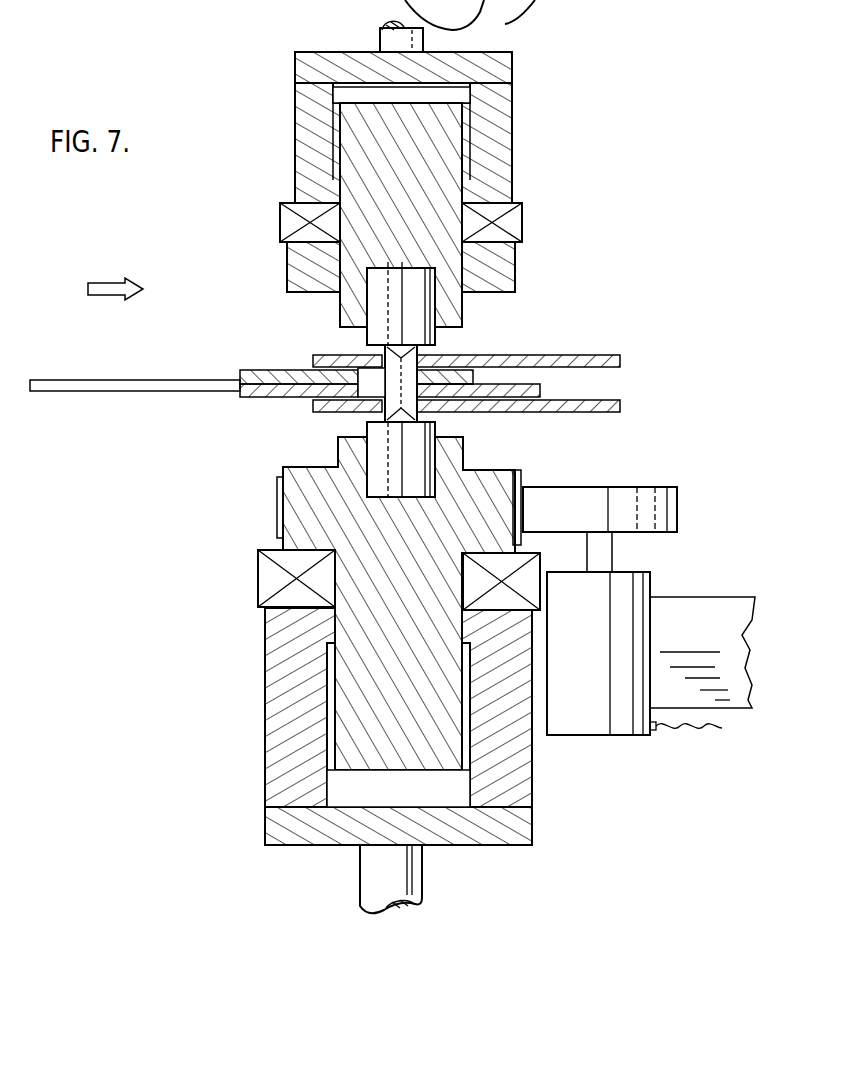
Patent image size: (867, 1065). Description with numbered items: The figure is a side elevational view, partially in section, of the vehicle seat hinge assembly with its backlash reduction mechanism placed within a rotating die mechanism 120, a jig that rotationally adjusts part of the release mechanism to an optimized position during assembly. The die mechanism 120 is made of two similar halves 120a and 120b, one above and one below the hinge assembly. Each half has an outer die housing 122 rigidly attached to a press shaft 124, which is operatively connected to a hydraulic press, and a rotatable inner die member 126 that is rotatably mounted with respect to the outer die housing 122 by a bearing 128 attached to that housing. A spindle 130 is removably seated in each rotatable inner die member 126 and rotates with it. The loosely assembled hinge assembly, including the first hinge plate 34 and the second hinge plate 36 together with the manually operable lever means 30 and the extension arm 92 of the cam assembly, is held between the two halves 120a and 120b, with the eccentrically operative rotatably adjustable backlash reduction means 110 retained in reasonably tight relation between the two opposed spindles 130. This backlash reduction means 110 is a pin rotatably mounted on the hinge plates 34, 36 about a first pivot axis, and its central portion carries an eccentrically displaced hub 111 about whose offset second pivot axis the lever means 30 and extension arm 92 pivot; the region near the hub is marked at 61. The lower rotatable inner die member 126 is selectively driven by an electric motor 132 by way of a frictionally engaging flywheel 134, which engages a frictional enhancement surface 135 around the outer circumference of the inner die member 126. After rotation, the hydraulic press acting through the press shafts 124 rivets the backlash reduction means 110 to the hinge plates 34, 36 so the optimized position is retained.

The manually operable lever means 30 is at (171, 388).
The first hinge plate 34 is at (602, 357).
The second hinge plate 36 is at (596, 412).
The bonding region 61 is at (420, 400).
The extension arm 92 is at (243, 370).
The eccentrically operative rotatably adjustable backlash reduction means 110 is at (418, 356).
The eccentrically displaced hub 111 is at (370, 380).
The rotating die mechanism 120 is at (91, 289).
The half of the rotating die mechanism 120a is at (236, 497).
The half of the rotating die mechanism 120b is at (288, 155).
The outer die housing 122 is at (505, 162).
The press shaft 124 is at (380, 42).
The rotatable inner die member 126 is at (290, 262).
The bearing 128 is at (520, 226).
The spindle 130 is at (372, 303).
The electric motor 132 is at (655, 590).
The frictionally engaging flywheel 134 is at (630, 487).
The frictional enhancement surface 135 is at (522, 483).